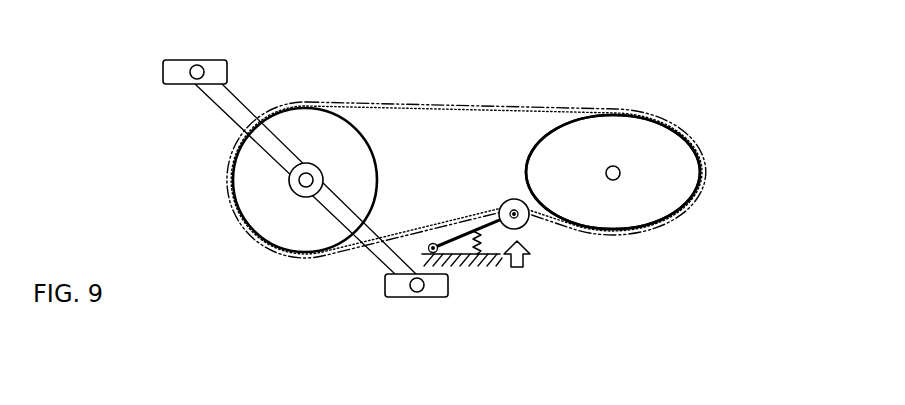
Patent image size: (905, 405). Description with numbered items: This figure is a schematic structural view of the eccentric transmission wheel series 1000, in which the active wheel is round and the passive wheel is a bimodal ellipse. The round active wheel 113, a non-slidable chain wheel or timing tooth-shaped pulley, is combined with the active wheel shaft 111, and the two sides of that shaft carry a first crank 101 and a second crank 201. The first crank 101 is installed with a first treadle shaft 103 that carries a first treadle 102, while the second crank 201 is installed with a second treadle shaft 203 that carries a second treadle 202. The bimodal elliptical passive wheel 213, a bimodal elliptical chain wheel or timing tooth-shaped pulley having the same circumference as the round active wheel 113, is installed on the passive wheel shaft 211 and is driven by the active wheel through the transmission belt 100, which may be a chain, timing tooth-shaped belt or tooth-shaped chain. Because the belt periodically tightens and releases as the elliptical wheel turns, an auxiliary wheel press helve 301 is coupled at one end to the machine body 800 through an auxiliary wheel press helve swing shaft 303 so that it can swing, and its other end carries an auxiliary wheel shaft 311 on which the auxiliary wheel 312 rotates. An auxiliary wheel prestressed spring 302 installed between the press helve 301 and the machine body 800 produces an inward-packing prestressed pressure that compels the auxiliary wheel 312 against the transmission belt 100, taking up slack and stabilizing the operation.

The transmission belt 100 is at (393, 108).
The eccentric transmission wheel series 1000 is at (485, 107).
The first crank 101 is at (253, 110).
The first treadle 102 is at (162, 72).
The first treadle shaft 103 is at (201, 74).
The active wheel shaft 111 is at (300, 182).
The round active wheel 113 is at (265, 227).
The second crank 201 is at (362, 242).
The second treadle 202 is at (448, 287).
The second treadle shaft 203 is at (420, 292).
The passive wheel shaft 211 is at (622, 172).
The bimodal elliptical passive wheel 213 is at (653, 227).
The auxiliary wheel press helve 301 is at (455, 236).
The auxiliary wheel prestressed spring 302 is at (487, 244).
The auxiliary wheel press helve swing shaft 303 is at (428, 247).
The auxiliary wheel shaft 311 is at (515, 199).
The auxiliary wheel 312 is at (532, 224).
The machine body 800 is at (473, 265).